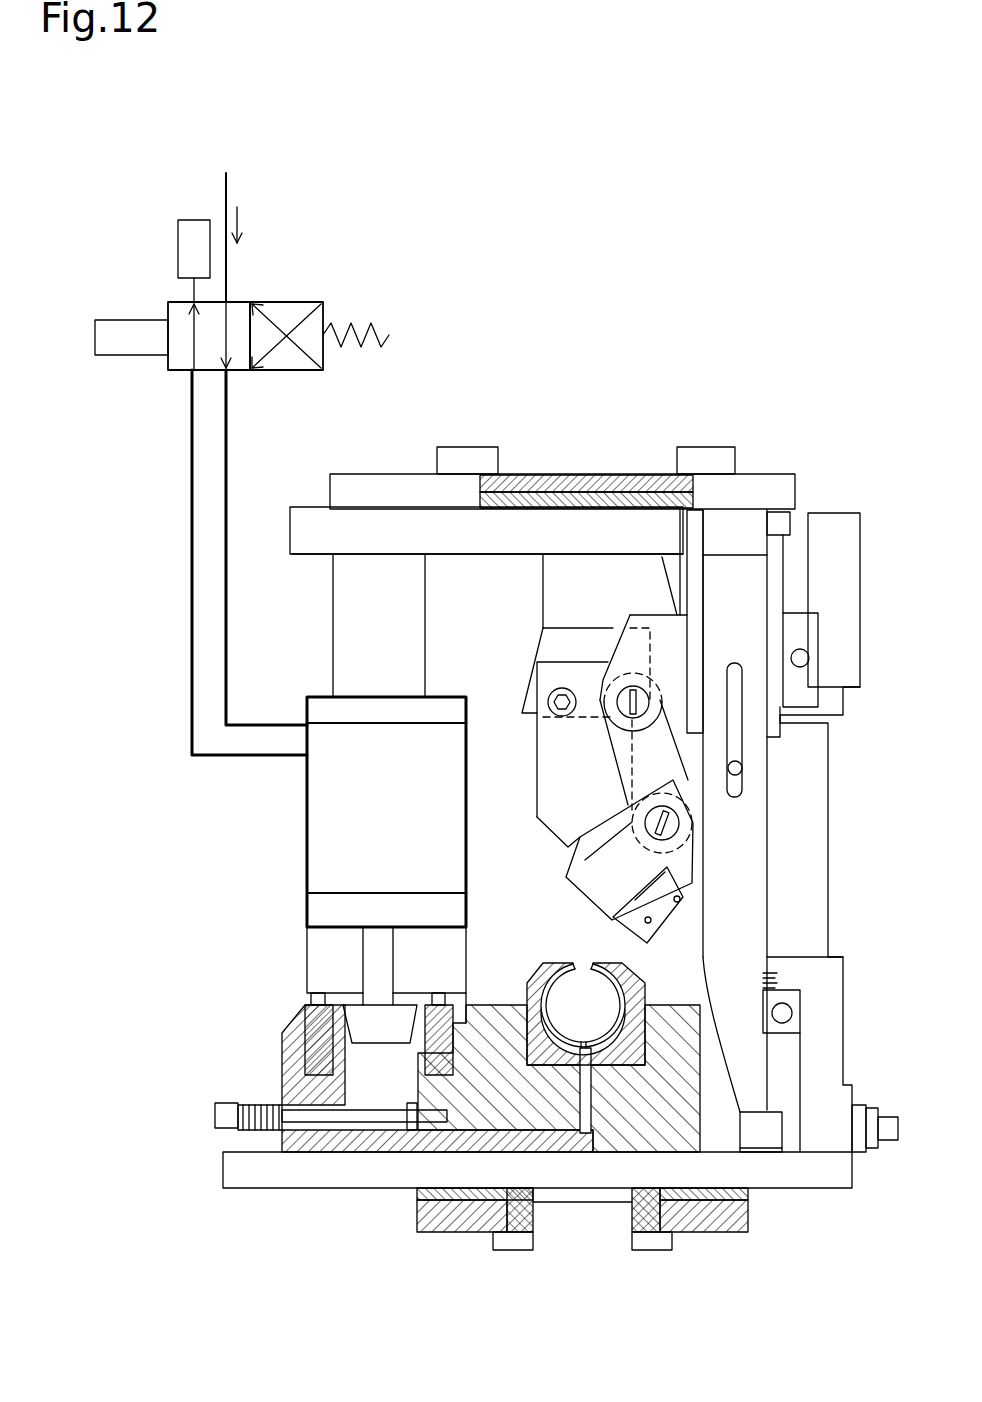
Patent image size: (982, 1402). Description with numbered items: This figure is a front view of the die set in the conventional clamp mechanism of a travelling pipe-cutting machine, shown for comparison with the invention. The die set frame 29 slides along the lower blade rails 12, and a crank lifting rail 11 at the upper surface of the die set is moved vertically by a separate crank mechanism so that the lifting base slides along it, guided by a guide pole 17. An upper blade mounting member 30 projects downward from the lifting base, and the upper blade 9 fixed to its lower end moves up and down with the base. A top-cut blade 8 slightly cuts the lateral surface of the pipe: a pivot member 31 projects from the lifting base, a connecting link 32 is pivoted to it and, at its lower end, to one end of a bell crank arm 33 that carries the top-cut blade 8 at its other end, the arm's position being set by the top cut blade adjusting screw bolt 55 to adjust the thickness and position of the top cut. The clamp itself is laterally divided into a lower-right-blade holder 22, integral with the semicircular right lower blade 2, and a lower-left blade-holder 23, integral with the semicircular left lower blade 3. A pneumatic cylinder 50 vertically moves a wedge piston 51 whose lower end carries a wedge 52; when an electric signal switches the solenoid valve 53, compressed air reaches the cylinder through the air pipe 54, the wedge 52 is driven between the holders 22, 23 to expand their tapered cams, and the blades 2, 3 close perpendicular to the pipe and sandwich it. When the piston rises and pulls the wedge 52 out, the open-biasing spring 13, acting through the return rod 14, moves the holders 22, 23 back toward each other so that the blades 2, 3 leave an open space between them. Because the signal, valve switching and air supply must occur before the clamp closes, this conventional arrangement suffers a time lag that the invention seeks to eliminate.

The right lower blade 2 is at (615, 960).
The left lower blade 3 is at (537, 963).
The top-cut blade 8 is at (648, 931).
The upper blade 9 is at (552, 787).
The crank lifting rail 11 is at (598, 476).
The lower blade rails 12 is at (433, 1225).
The open-biasing spring 13 is at (257, 1105).
The return rod 14 is at (402, 1085).
The guide pole 17 is at (740, 650).
The lower-right-blade holder 22 is at (298, 1050).
The lower-left blade-holder 23 is at (559, 1031).
The die set frame 29 is at (331, 1178).
The upper blade mounting member 30 is at (473, 634).
The pivot member 31 is at (607, 660).
The connecting link 32 is at (620, 762).
The bell crank arm 33 is at (567, 867).
The pneumatic cylinder 50 is at (392, 845).
The wedge piston 51 is at (367, 970).
The wedge 52 is at (398, 1017).
The solenoid valve 53 is at (245, 370).
The air pipe 54 is at (225, 545).
The top cut blade adjusting screw bolt 55 is at (862, 1150).